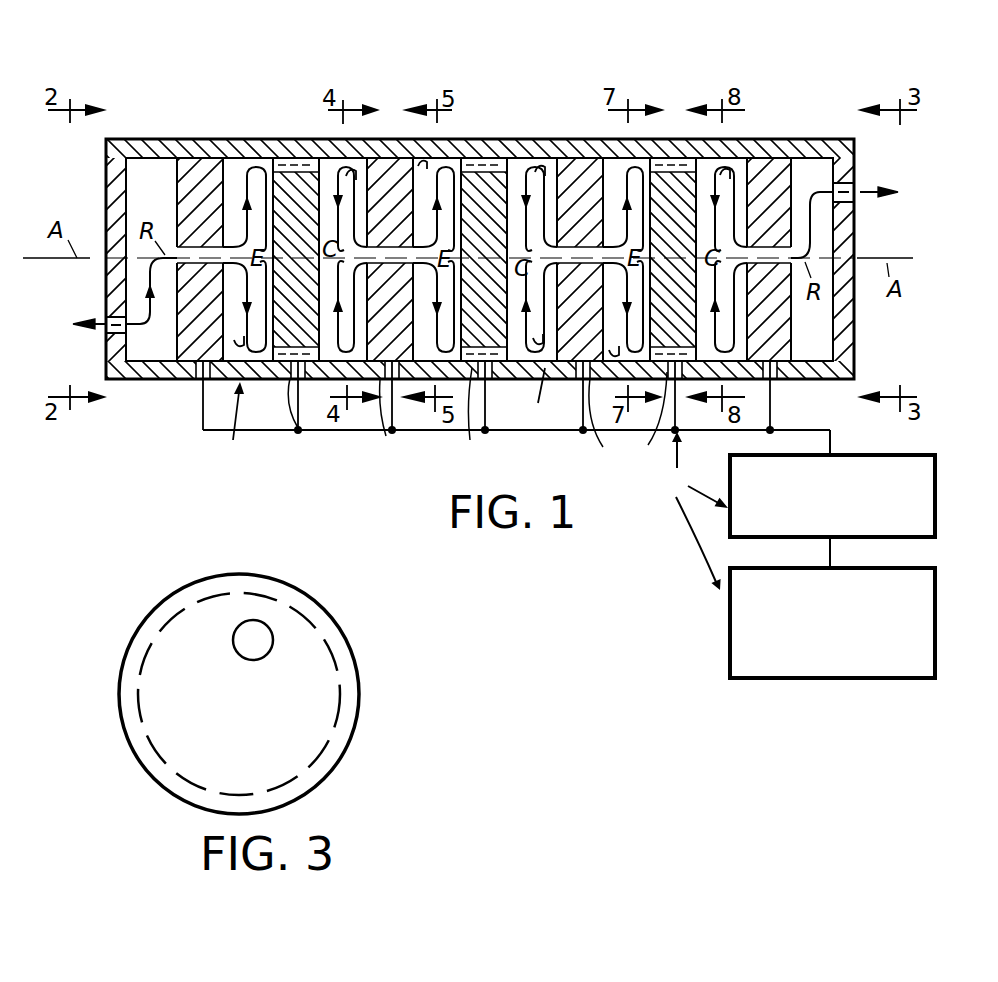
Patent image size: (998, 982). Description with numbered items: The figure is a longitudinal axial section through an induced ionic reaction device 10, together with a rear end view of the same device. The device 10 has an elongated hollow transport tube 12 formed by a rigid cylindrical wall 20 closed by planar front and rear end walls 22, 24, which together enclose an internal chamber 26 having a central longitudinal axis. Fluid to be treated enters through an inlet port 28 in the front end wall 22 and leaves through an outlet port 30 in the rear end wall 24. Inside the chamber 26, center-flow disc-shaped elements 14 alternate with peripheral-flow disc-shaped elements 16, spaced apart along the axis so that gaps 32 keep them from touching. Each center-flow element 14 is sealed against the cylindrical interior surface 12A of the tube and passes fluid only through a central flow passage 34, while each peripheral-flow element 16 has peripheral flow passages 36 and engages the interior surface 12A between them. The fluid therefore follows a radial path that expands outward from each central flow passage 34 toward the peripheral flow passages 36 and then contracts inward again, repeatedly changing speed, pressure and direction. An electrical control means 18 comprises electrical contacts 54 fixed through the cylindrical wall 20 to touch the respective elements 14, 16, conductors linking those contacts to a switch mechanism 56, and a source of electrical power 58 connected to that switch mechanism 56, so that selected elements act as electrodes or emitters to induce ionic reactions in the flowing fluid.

In FIG. 1, the ionic reaction device 10 is at (546, 44).
In FIG. 1, the transport tube 12 is at (232, 425).
In FIG. 1, the cylindrical interior surface 12A is at (551, 397).
In FIG. 1, the center-flow disc-shaped element 14 is at (392, 158).
In FIG. 1, the peripheral-flow disc-shaped element 16 is at (500, 160).
In FIG. 1, the electrical control means 18 is at (744, 510).
In FIG. 1, the cylindrical wall 20 is at (478, 140).
In FIG. 3, the cylindrical wall 20 is at (138, 688).
In FIG. 1, the front end wall 22 is at (110, 182).
In FIG. 1, the rear end wall 24 is at (852, 326).
In FIG. 3, the rear end wall 24 is at (354, 668).
In FIG. 1, the internal chamber 26 is at (236, 170).
In FIG. 1, the inlet port 28 is at (107, 320).
In FIG. 1, the outlet port 30 is at (855, 180).
In FIG. 3, the outlet port 30 is at (251, 660).
In FIG. 1, the gap 32 is at (348, 172).
In FIG. 1, the central flow passage 34 is at (205, 250).
In FIG. 1, the peripheral flow passage 36 is at (283, 160).
In FIG. 1, the electrical contact 54 is at (200, 381).
In FIG. 1, the switch mechanism 56 is at (507, 428).
In FIG. 1, the source of electrical power 58 is at (937, 470).